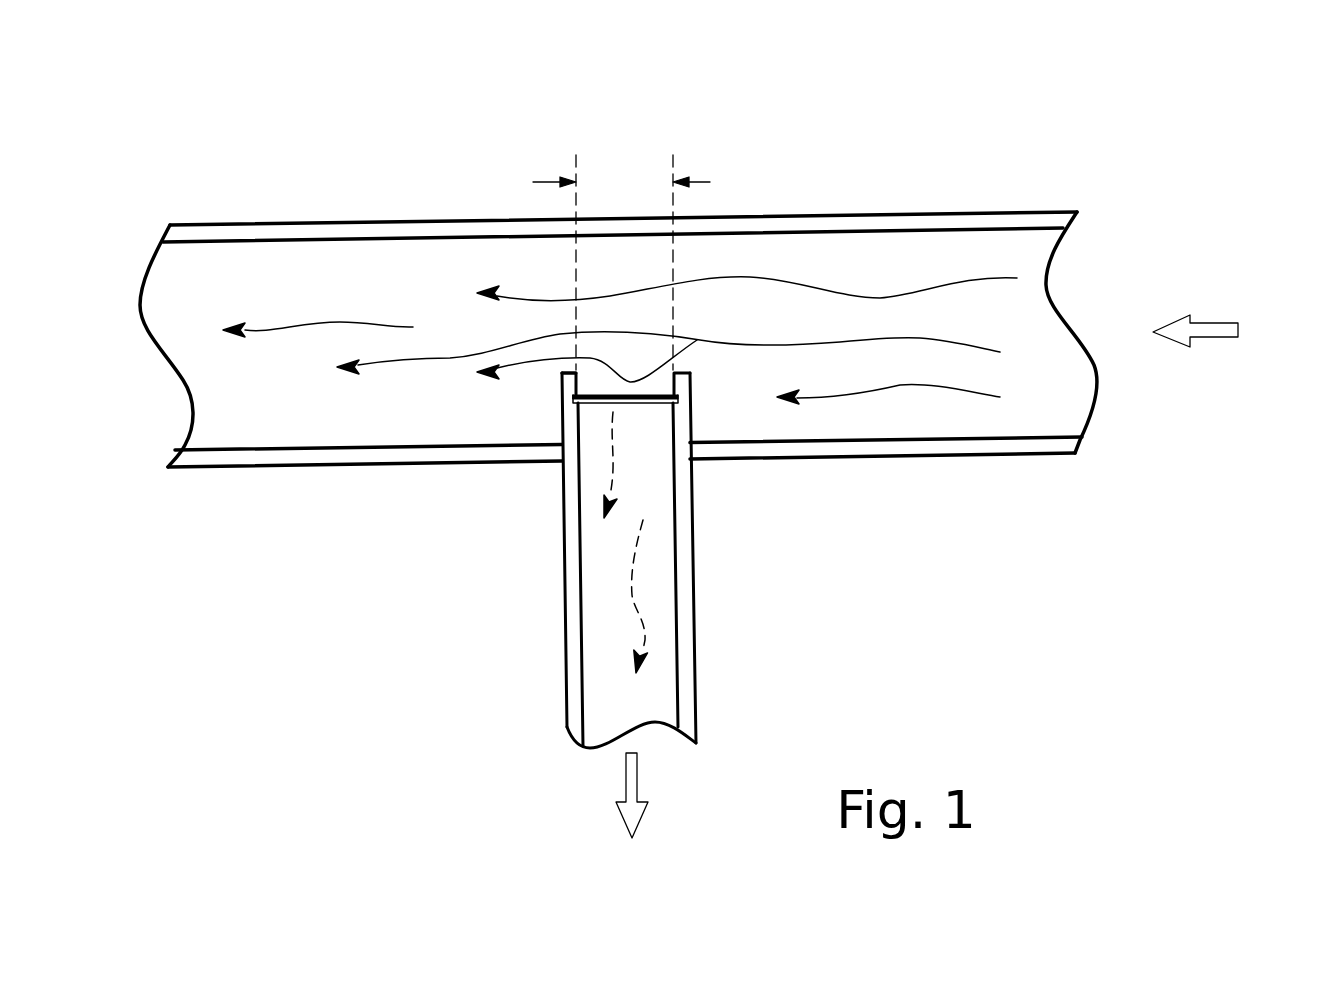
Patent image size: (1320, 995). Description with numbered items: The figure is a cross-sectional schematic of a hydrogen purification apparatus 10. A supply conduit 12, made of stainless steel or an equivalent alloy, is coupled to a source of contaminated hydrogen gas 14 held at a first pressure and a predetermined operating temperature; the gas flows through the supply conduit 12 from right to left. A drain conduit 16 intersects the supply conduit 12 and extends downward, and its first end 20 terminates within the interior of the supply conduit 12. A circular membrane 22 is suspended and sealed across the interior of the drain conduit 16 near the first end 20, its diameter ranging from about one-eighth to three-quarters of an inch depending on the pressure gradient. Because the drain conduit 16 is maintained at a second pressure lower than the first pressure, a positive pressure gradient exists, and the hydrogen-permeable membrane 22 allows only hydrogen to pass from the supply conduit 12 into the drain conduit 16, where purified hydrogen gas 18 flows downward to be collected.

The hydrogen purification apparatus 10 is at (726, 488).
The supply conduit 12 is at (963, 222).
The contaminated hydrogen gas 14 is at (923, 340).
The drain conduit 16 is at (628, 558).
The purified hydrogen gas 18 is at (645, 612).
The first end 20 is at (568, 374).
The membrane 22 is at (653, 403).